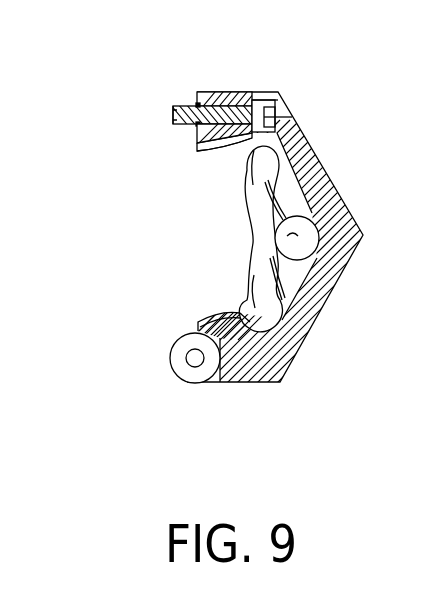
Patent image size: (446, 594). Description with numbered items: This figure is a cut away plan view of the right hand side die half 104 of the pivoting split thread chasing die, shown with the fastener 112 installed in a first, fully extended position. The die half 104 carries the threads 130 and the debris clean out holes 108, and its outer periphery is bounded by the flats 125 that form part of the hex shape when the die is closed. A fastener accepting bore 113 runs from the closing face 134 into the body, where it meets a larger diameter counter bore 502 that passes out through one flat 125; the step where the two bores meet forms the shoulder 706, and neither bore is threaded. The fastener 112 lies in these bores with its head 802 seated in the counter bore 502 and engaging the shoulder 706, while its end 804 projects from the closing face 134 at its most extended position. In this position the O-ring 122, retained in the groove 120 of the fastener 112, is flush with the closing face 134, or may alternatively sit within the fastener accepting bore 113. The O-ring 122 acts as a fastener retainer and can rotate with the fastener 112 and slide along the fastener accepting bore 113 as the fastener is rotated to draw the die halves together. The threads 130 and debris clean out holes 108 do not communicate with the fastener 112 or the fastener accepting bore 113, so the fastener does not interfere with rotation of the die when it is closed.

The right hand side die half 104 is at (336, 283).
The debris clean out holes 108 is at (280, 240).
The fastener 112 is at (197, 134).
The fastener accepting bore 113 is at (222, 92).
The groove 120 is at (196, 110).
The O-ring 122 is at (197, 105).
The flats 125 is at (233, 92).
The threads 130 is at (225, 315).
The closing face 134 is at (208, 152).
The counter bore 502 is at (292, 115).
The shoulder 706 is at (262, 92).
The head 802 is at (282, 128).
The end 804 is at (172, 115).